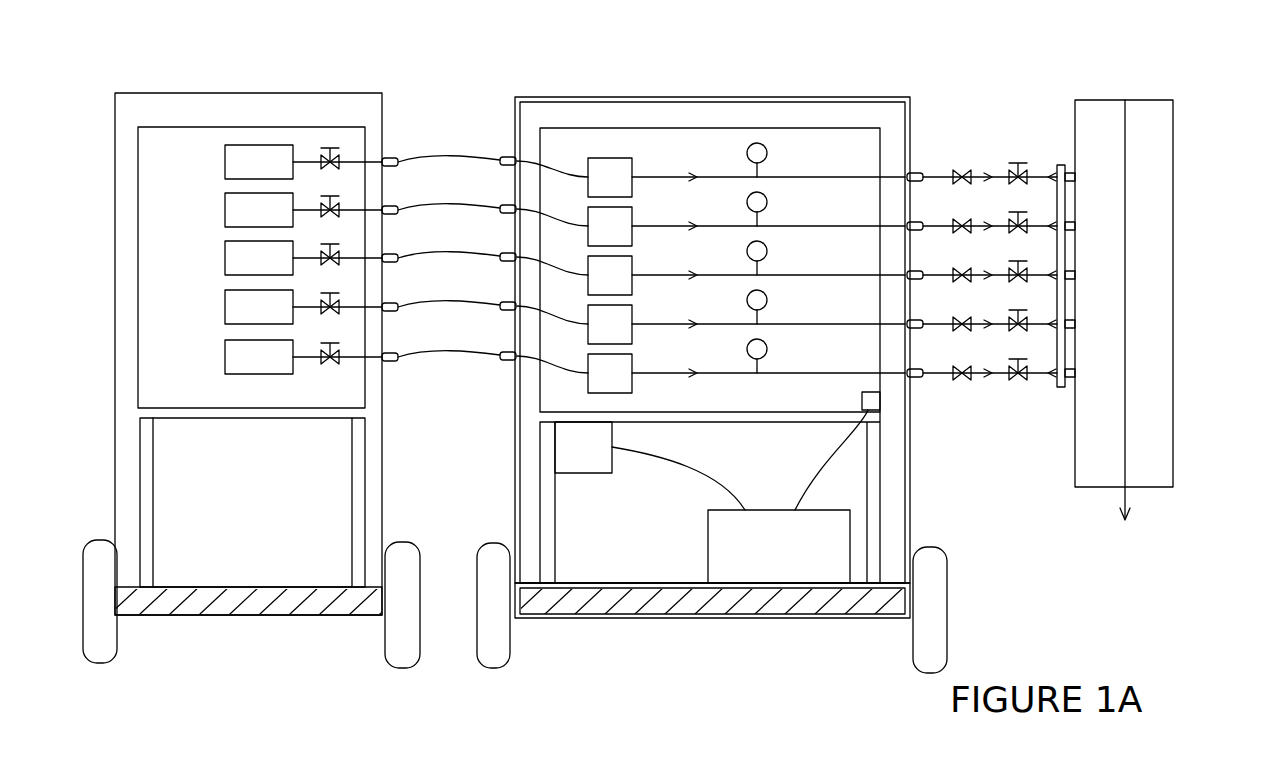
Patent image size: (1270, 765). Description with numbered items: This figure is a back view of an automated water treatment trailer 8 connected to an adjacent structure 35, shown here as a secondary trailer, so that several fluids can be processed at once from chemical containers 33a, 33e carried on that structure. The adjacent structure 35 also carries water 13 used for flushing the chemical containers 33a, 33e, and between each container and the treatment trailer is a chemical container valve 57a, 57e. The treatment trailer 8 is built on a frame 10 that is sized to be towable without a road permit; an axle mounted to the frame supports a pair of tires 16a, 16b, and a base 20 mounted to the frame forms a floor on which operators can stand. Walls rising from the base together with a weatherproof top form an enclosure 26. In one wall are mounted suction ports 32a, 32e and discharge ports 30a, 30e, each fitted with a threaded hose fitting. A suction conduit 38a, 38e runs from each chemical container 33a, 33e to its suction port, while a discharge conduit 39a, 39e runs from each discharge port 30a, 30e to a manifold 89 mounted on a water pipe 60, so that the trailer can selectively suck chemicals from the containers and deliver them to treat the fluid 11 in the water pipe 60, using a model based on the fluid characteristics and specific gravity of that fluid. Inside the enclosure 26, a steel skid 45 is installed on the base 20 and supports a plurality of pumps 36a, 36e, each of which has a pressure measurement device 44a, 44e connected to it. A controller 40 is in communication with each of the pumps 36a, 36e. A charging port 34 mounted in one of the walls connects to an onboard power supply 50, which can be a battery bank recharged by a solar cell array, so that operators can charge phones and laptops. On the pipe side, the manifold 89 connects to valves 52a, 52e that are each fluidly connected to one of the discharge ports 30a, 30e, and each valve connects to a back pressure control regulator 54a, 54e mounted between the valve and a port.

The automated water treatment trailer 8 is at (568, 92).
The frame 10 is at (568, 602).
The fluid 11 is at (1122, 420).
The water 13 is at (175, 520).
The tire 16a is at (945, 617).
The tire 16b is at (478, 610).
The base 20 is at (638, 588).
The enclosure 26 is at (675, 552).
The discharge port 30a is at (915, 170).
The discharge port 30e is at (915, 385).
The suction port 32a is at (500, 152).
The suction port 32e is at (510, 362).
The chemical container 33a is at (250, 164).
The chemical container 33e is at (238, 358).
The charging port 34 is at (878, 410).
The adjacent structure 35 is at (237, 622).
The pump 36a is at (612, 155).
The pump 36e is at (610, 378).
The suction conduit 38a is at (431, 152).
The suction conduit 38e is at (458, 352).
The discharge conduit 39a is at (1019, 140).
The discharge conduit 39e is at (1000, 385).
The controller 40 is at (583, 446).
The pressure measurement device 44a is at (762, 148).
The pressure measurement device 44e is at (755, 365).
The skid 45 is at (797, 420).
The onboard power supply 50 is at (773, 570).
The valve 52a is at (1012, 170).
The valve 52e is at (1008, 382).
The back pressure control regulator 54a is at (960, 170).
The back pressure control regulator 54e is at (960, 382).
The chemical container valve 57a is at (330, 146).
The chemical container valve 57e is at (330, 365).
The water pipe 60 is at (1147, 100).
The manifold 89 is at (1063, 165).